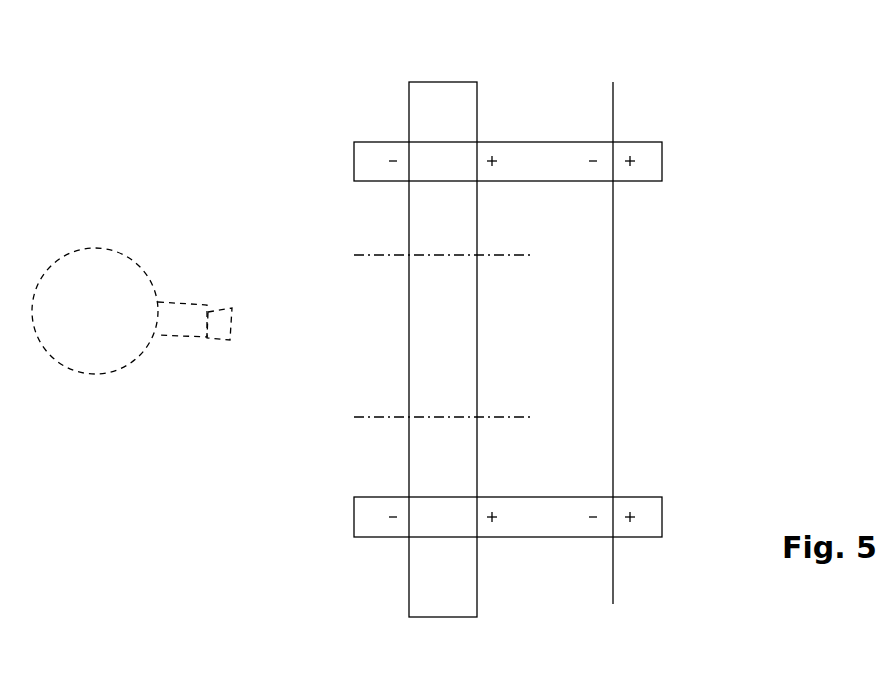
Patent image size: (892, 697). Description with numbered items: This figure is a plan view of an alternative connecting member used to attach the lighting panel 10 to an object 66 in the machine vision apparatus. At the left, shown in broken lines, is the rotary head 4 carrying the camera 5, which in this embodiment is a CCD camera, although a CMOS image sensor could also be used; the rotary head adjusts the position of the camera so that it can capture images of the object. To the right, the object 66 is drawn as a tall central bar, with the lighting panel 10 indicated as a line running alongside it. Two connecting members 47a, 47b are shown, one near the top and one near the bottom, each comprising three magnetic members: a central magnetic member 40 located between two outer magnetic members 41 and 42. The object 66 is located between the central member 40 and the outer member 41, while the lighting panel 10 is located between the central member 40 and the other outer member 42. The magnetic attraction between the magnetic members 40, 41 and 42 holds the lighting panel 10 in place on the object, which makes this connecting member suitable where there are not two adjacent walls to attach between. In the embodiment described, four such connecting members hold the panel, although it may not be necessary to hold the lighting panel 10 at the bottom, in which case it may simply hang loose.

The rotary head 4 is at (106, 248).
The camera 5 is at (170, 332).
The lighting panel 10 is at (613, 328).
The central magnetic member 40 is at (538, 133).
The outer magnetic member 41 is at (354, 142).
The outer magnetic member 42 is at (665, 156).
The connecting member 47a is at (540, 545).
The connecting member 47b is at (534, 142).
The object 66 is at (409, 335).